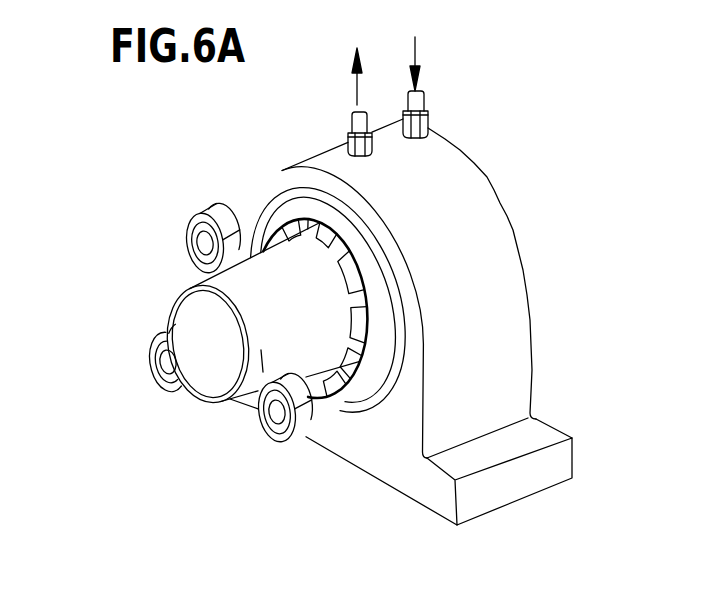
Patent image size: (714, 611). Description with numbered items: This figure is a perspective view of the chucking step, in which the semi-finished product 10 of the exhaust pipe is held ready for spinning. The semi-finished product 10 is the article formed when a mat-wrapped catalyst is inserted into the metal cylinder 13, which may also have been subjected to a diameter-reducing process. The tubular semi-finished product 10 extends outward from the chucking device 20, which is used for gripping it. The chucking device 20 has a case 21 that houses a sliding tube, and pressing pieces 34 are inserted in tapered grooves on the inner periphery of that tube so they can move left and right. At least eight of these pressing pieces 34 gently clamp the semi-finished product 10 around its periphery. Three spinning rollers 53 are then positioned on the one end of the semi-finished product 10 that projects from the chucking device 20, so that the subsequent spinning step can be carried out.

The semi-finished product 10 is at (166, 296).
The metal cylinder 13 is at (241, 401).
The chucking device 20 is at (497, 162).
The case 21 is at (511, 330).
The pressing pieces 34 is at (316, 246).
The spinning rollers 53 is at (212, 206).